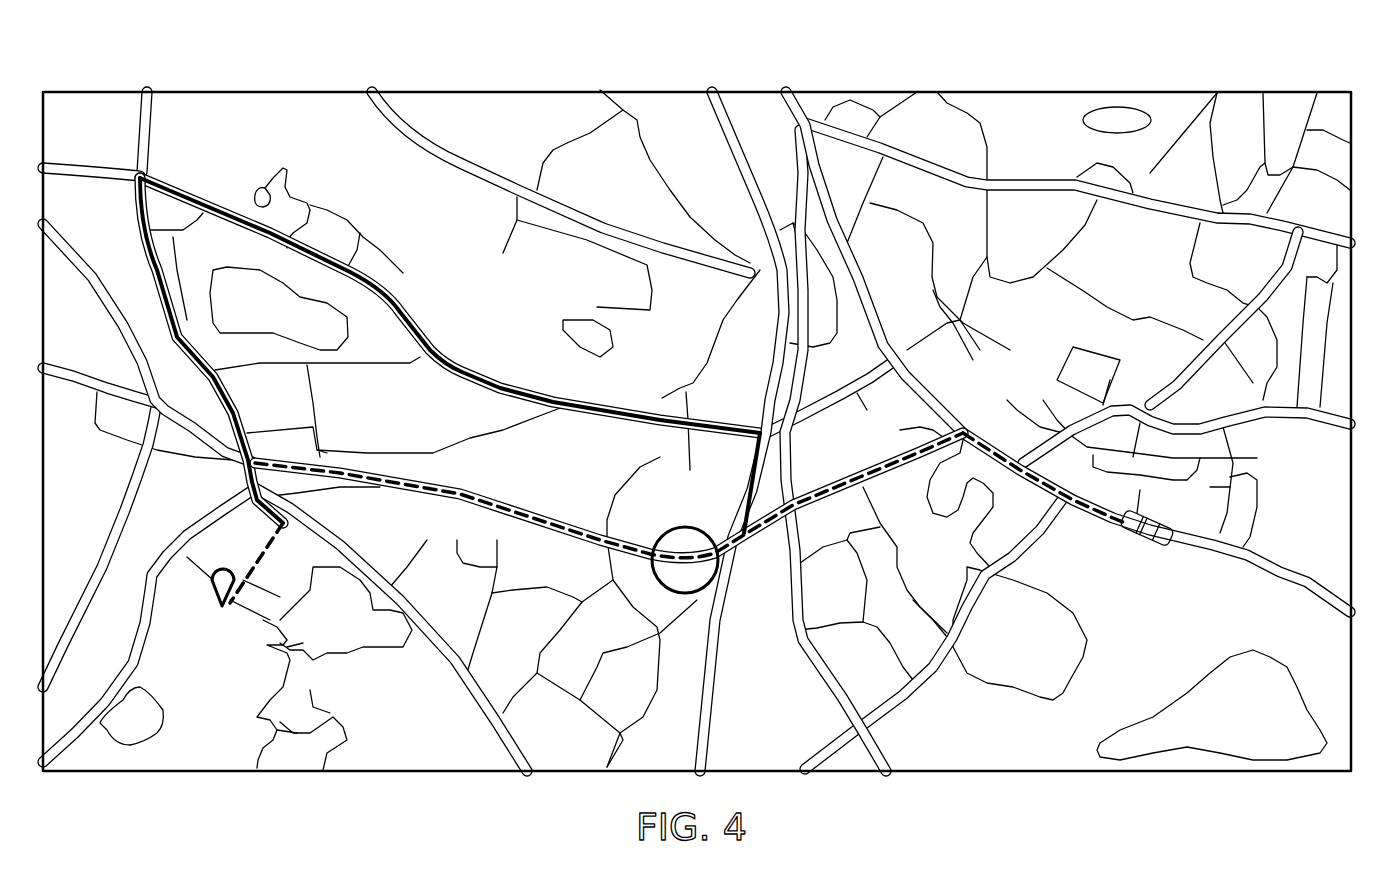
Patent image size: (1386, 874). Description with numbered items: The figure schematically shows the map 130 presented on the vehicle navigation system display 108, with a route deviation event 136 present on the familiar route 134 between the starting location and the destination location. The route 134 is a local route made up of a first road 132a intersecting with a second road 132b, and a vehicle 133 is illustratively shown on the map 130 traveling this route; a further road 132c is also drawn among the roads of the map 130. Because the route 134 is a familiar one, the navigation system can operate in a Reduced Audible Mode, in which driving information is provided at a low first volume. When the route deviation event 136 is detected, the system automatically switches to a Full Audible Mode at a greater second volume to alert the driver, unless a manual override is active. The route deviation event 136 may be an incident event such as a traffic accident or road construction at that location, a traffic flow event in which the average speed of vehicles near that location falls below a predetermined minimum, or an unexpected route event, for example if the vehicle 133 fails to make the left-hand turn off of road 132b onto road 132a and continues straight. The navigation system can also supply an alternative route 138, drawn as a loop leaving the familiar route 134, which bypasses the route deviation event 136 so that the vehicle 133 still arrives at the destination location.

The vehicle navigation system display 108 is at (1238, 92).
The map 130 is at (483, 106).
The first road 132a is at (857, 478).
The second road 132b is at (930, 397).
The road segment 132c is at (722, 697).
The vehicle 133 is at (1157, 540).
The route 134 is at (550, 512).
The route deviation event 136 is at (685, 527).
The alternative route 138 is at (465, 372).